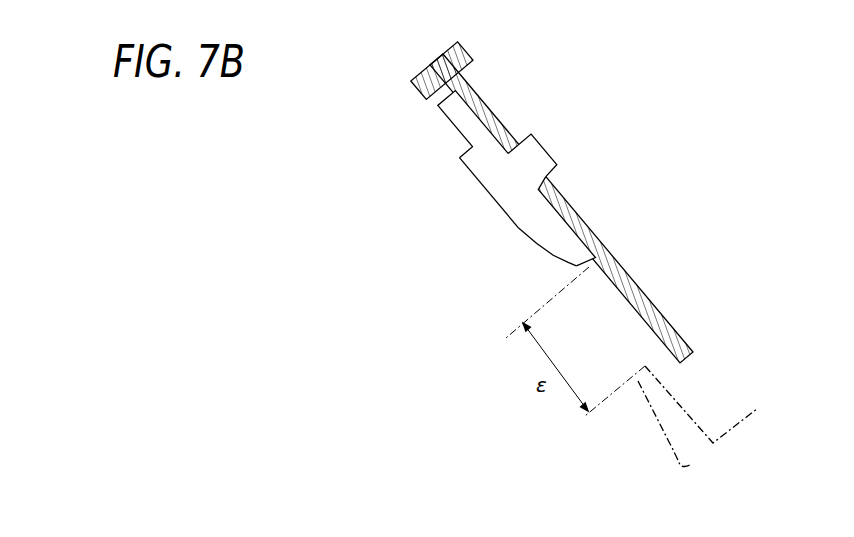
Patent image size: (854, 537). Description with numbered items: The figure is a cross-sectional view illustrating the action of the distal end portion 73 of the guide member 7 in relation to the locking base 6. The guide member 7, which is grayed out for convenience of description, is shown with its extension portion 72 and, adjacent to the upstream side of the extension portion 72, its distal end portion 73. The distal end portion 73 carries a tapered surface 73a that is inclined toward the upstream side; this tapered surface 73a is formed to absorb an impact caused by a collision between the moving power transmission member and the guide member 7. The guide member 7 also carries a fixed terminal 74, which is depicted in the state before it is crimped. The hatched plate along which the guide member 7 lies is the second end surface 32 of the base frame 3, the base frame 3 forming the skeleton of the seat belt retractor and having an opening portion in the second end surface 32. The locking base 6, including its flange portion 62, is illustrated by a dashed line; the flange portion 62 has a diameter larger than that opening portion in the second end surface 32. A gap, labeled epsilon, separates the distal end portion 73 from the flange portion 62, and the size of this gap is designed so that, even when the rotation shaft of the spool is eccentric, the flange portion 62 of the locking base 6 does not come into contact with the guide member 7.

The base frame 3 is at (556, 202).
The second end surface 32 is at (624, 271).
The guide member 7 is at (504, 178).
The extension portion 72 is at (461, 159).
The distal end portion 73 is at (528, 212).
The tapered surface 73a is at (541, 248).
The fixed terminal 74 is at (545, 148).
The locking base 6 is at (632, 372).
The flange portion 62 is at (656, 406).